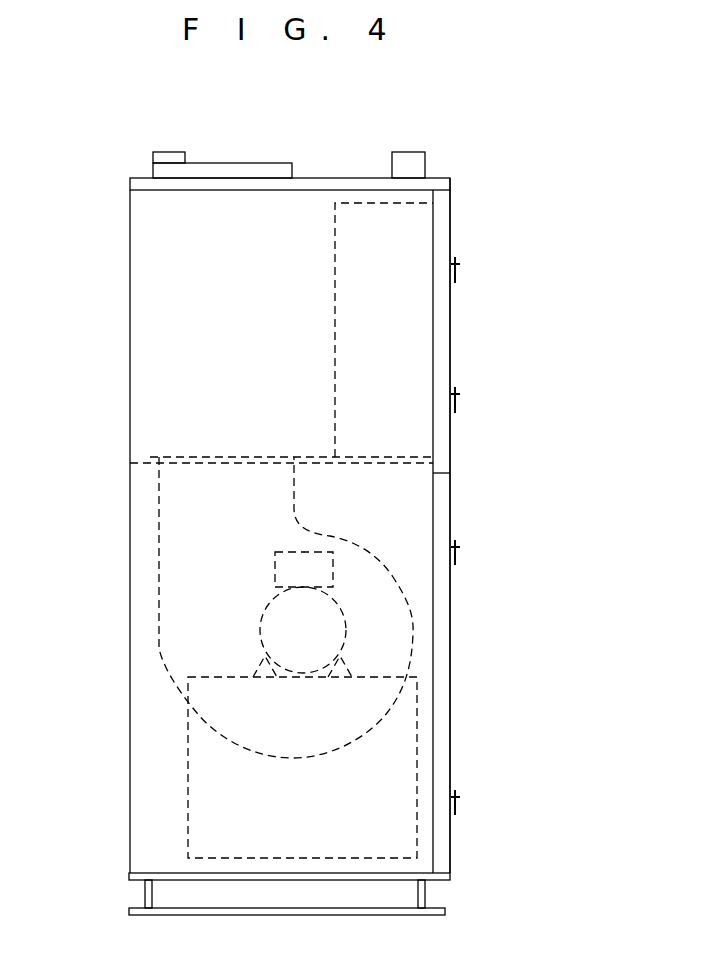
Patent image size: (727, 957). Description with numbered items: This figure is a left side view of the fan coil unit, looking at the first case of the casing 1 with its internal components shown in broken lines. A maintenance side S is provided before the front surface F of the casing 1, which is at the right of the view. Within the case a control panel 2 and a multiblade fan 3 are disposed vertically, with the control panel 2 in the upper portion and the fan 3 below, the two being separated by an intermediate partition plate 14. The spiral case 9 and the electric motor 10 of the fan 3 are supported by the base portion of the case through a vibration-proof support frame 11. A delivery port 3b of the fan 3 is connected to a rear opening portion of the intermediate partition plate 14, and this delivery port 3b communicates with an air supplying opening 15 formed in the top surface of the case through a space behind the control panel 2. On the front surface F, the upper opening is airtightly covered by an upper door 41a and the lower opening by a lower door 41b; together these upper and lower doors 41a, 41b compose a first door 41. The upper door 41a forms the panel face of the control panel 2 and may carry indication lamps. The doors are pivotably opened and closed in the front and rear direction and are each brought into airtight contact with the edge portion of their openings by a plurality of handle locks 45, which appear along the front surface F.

The casing 1 is at (126, 345).
The control panel 2 is at (334, 318).
The multiblade fan 3 is at (70, 585).
The delivery port 3b is at (230, 455).
The spiral case 9 is at (158, 600).
The electric motor 10 is at (258, 629).
The vibration-proof support frame 11 is at (187, 788).
The intermediate partition plate 14 is at (146, 457).
The air supplying opening 15 is at (248, 163).
The first door 41 is at (532, 432).
The upper door 41a is at (443, 447).
The lower door 41b is at (440, 508).
The handle lock 45 is at (458, 276).
The front surface F is at (451, 213).
The maintenance side S is at (555, 722).